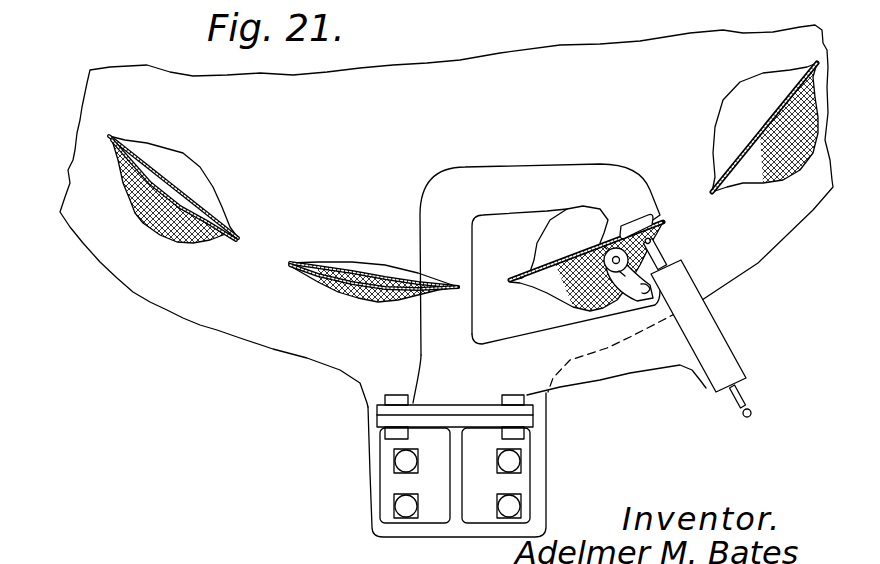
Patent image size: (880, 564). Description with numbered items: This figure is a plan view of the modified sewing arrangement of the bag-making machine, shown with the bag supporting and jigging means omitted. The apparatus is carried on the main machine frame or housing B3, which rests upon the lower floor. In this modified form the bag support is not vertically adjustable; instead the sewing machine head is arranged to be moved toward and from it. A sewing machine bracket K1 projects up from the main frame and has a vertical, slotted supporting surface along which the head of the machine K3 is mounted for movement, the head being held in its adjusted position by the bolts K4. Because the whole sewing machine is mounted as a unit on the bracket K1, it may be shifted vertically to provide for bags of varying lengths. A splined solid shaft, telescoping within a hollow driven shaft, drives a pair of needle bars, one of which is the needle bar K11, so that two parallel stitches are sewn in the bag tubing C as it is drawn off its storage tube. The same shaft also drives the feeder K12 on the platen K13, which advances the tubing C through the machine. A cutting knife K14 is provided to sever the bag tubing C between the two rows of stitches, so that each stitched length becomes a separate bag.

The main machine frame or housing B3 is at (210, 313).
The bag tubing C is at (240, 238).
The sewing machine bracket K1 is at (385, 422).
The head of the machine K3 is at (645, 363).
The bolts K4 is at (393, 395).
The needle bar K11 is at (662, 255).
The feeder K12 is at (642, 210).
The platen K13 is at (620, 200).
The cutting knife K14 is at (613, 273).